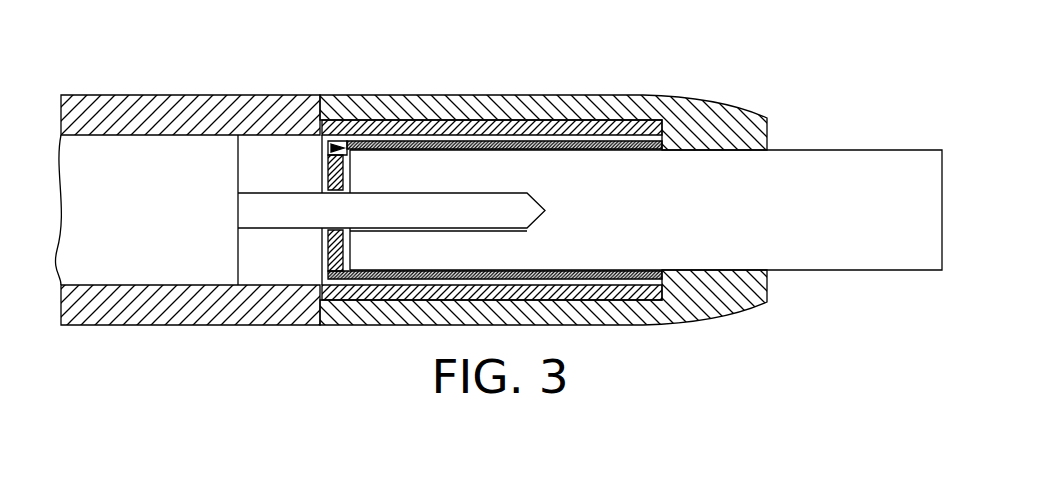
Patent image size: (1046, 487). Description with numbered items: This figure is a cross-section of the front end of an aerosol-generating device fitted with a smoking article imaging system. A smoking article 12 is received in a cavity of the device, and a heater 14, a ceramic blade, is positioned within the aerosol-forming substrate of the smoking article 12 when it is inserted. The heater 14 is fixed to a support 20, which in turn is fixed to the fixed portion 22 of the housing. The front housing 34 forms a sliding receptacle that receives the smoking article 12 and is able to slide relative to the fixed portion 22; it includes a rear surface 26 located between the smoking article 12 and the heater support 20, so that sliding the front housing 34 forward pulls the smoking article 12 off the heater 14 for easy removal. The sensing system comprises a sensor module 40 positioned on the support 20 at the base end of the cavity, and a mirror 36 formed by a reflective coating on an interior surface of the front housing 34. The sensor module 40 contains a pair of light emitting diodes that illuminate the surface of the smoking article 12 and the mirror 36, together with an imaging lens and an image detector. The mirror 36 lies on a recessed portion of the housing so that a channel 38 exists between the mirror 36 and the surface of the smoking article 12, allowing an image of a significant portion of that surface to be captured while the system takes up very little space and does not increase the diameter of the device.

The smoking article 12 is at (854, 148).
The heater 14 is at (468, 207).
The support 20 is at (253, 177).
The fixed portion 22 is at (270, 112).
The rear surface 26 is at (330, 251).
The front housing 34 is at (713, 126).
The mirror 36 is at (392, 126).
The channel 38 is at (428, 146).
The sensor module 40 is at (330, 148).